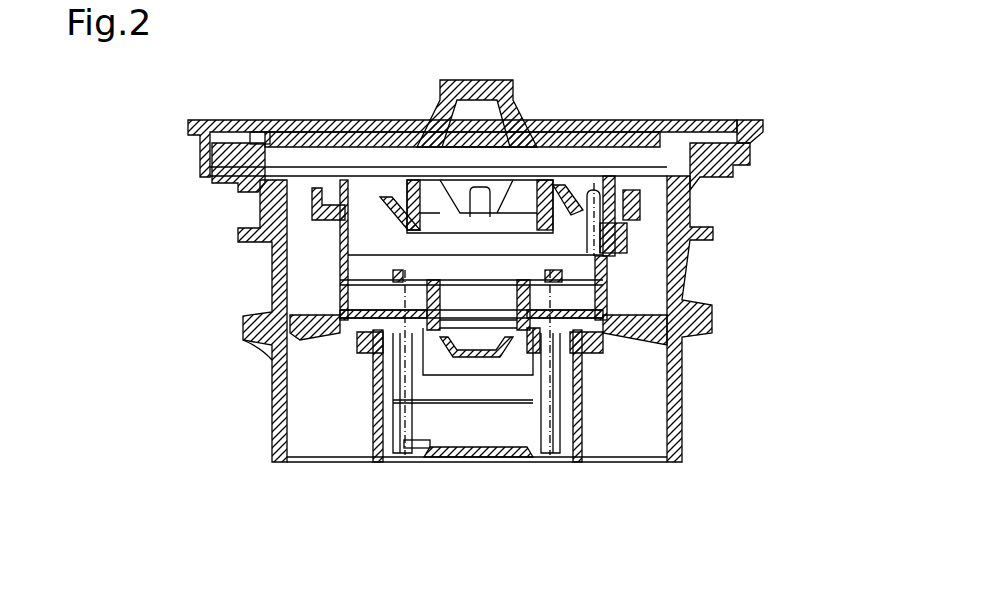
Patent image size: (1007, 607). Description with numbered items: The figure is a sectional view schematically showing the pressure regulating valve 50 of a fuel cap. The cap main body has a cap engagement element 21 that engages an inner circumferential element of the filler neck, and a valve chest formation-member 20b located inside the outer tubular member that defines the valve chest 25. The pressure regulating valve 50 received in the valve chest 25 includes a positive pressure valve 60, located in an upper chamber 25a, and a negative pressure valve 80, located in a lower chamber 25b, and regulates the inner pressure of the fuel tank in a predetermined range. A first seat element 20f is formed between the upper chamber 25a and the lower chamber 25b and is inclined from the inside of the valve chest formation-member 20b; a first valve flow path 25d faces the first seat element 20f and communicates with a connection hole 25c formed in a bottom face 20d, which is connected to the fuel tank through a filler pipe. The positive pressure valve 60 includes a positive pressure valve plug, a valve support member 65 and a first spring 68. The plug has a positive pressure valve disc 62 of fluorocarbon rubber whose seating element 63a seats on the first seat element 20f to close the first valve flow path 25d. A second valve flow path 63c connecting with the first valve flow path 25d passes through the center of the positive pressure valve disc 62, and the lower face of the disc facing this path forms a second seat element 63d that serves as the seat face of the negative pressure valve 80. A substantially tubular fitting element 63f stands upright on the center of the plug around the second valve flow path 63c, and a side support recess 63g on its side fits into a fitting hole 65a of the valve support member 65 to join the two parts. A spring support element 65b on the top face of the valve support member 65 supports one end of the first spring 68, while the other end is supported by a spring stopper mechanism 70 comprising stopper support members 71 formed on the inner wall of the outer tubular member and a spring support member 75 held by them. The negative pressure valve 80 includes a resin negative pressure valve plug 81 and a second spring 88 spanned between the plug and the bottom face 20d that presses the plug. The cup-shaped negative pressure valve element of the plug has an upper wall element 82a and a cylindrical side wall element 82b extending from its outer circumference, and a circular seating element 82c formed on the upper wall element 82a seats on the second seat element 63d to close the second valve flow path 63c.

The valve chest formation-member 20b is at (627, 285).
The bottom face 20d is at (507, 468).
The first seat element 20f is at (583, 340).
The cap engagement element 21 is at (247, 335).
The valve chest 25 is at (162, 242).
The upper chamber 25a is at (347, 245).
The lower chamber 25b is at (387, 358).
The connection hole 25c is at (492, 462).
The first valve flow path 25d is at (575, 345).
The pressure regulating valve 50 is at (390, 535).
The positive pressure valve 60 is at (413, 357).
The negative pressure valve 80 is at (420, 445).
The second spring 88 is at (430, 452).
The positive pressure valve disc 62 is at (490, 283).
The seating element 63a is at (600, 320).
The second valve flow path 63c is at (500, 320).
The second seat element 63d is at (450, 82).
The fitting element 63f is at (447, 300).
The side support recess 63g is at (420, 300).
The valve support member 65 is at (672, 74).
The fitting hole 65a is at (540, 300).
The spring support element 65b is at (598, 186).
The first spring 68 is at (320, 190).
The spring stopper mechanism 70 is at (708, 70).
The stopper support member 71 is at (655, 192).
The spring support member 75 is at (672, 140).
The negative pressure valve plug 81 is at (530, 527).
The upper wall element 82a is at (540, 463).
The cylindrical side wall element 82b is at (637, 462).
The circular seating element 82c is at (593, 462).